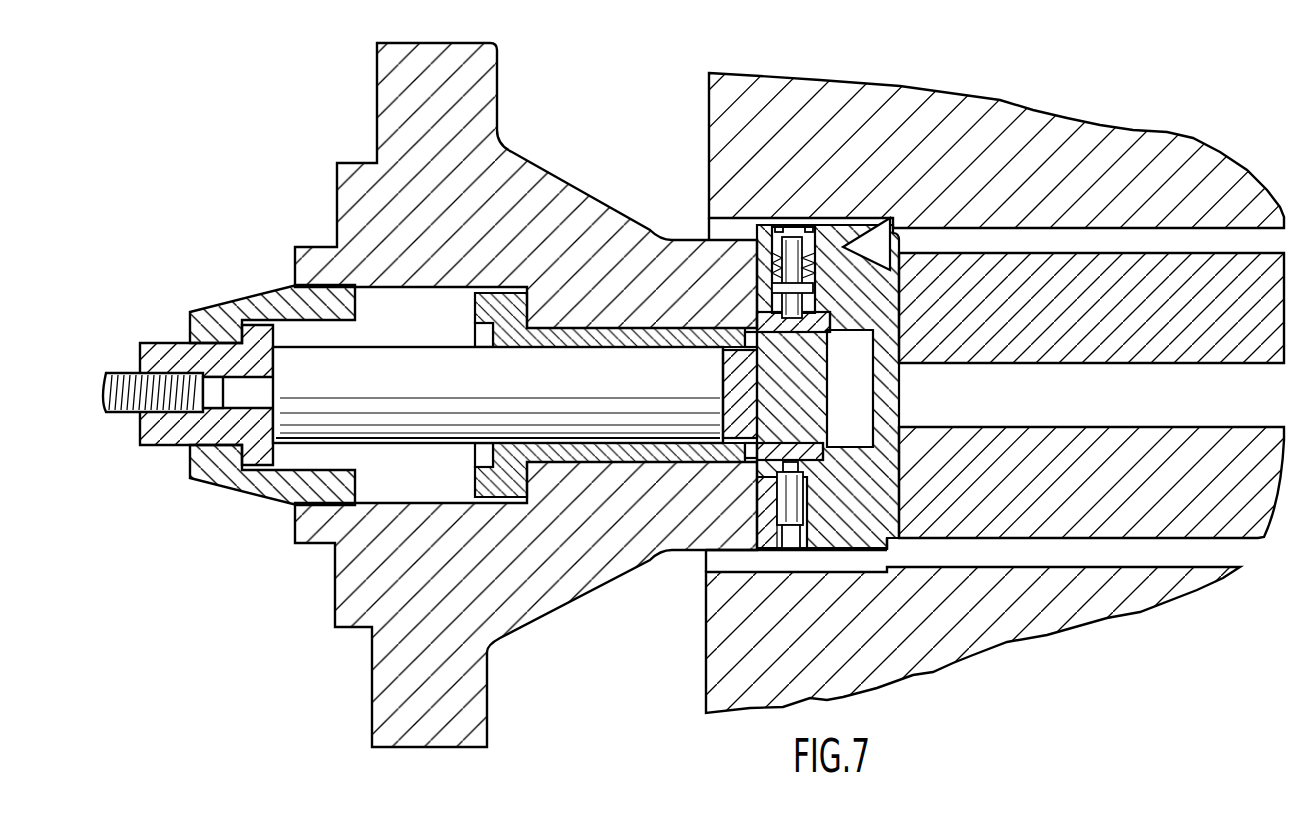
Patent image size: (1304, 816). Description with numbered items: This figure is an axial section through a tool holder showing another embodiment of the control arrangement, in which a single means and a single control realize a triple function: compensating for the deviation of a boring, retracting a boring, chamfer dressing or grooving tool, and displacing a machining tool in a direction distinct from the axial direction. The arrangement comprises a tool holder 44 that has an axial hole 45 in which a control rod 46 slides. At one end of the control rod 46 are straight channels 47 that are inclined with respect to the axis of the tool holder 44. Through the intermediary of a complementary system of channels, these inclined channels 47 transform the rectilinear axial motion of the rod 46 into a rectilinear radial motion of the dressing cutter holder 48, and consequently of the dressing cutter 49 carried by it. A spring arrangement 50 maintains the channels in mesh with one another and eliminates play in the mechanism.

The tool holder 44 is at (533, 177).
The axial hole 45 is at (585, 347).
The control rod 46 is at (590, 423).
The straight channels 47 is at (738, 428).
The dressing cutter holder 48 is at (880, 318).
The dressing cutter 49 is at (880, 258).
The spring arrangement 50 is at (813, 270).